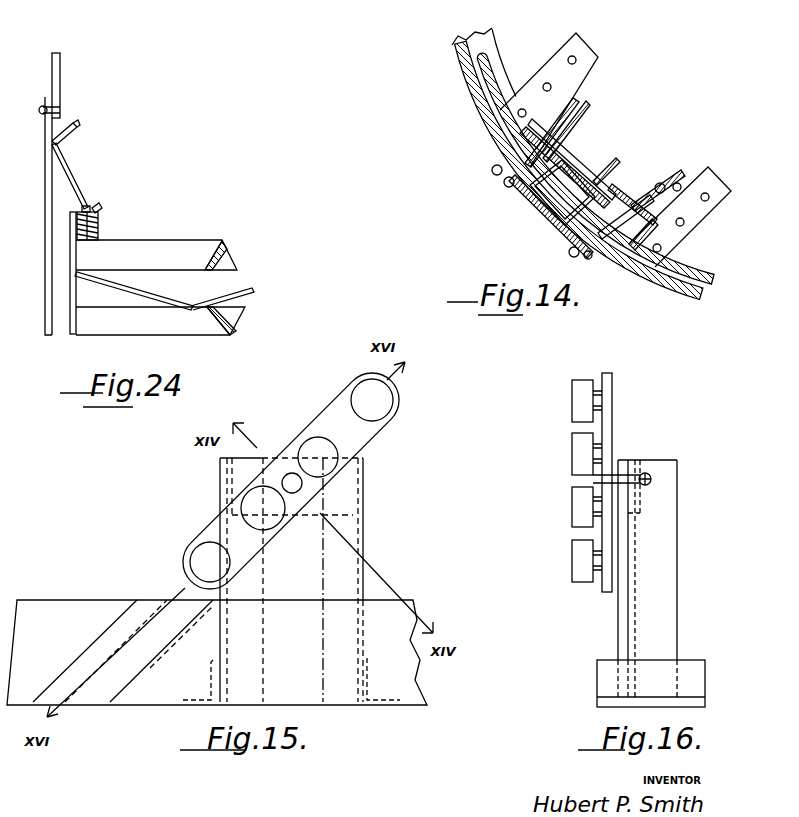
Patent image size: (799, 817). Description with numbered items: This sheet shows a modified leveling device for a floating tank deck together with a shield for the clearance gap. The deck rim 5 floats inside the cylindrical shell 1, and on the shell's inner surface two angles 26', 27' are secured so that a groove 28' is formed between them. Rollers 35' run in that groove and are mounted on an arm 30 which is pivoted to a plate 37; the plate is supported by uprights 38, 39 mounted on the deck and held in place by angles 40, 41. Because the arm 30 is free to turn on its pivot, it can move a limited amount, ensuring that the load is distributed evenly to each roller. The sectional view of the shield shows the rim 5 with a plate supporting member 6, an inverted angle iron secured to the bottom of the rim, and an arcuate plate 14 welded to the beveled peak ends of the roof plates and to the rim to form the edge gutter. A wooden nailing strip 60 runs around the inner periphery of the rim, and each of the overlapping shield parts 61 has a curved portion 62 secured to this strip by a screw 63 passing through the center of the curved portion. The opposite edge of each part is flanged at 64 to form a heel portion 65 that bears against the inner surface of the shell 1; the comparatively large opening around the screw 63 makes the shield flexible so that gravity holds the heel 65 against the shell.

In FIG. 24, the cylindrical shell 1 is at (45, 288).
In FIG. 14, the cylindrical shell 1 is at (468, 103).
In FIG. 24, the rim 5 is at (70, 328).
In FIG. 14, the rim 5 is at (482, 70).
In FIG. 15, the rim 5 is at (44, 640).
In FIG. 24, the plate supporting member 6 is at (207, 333).
In FIG. 24, the arcuate shaped plate 14 is at (174, 275).
In FIG. 14, the angle 26' is at (487, 186).
In FIG. 14, the angle 27' is at (607, 282).
In FIG. 14, the groove 28' is at (551, 219).
In FIG. 14, the arm 30 is at (570, 163).
In FIG. 15, the arm 30 is at (293, 435).
In FIG. 16, the arm 30 is at (608, 413).
In FIG. 14, the rollers 35' is at (542, 202).
In FIG. 15, the rollers 35' is at (286, 480).
In FIG. 16, the rollers 35' is at (561, 481).
In FIG. 14, the plate 37 is at (613, 177).
In FIG. 15, the plate 37 is at (345, 505).
In FIG. 16, the plate 37 is at (637, 465).
In FIG. 14, the upright 38 is at (560, 110).
In FIG. 15, the upright 38 is at (233, 633).
In FIG. 14, the upright 39 is at (667, 185).
In FIG. 15, the upright 39 is at (330, 632).
In FIG. 16, the upright 39 is at (643, 577).
In FIG. 14, the angle 40 is at (580, 52).
In FIG. 15, the angle 40 is at (182, 705).
In FIG. 14, the angle 41 is at (697, 215).
In FIG. 15, the angle 41 is at (377, 705).
In FIG. 16, the angle 41 is at (680, 685).
In FIG. 24, the wooden strip 60 is at (97, 217).
In FIG. 24, the shield part 61 is at (73, 173).
In FIG. 24, the curved portion 62 is at (97, 207).
In FIG. 24, the screw 63 is at (86, 207).
In FIG. 24, the flange 64 is at (78, 124).
In FIG. 24, the heel portion 65 is at (78, 143).